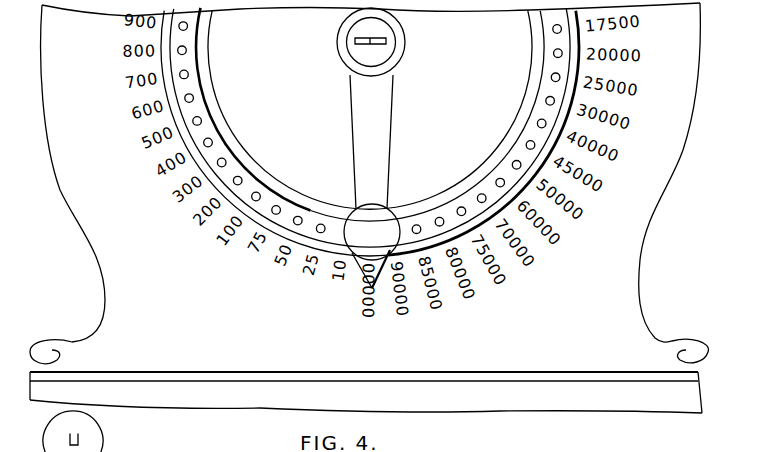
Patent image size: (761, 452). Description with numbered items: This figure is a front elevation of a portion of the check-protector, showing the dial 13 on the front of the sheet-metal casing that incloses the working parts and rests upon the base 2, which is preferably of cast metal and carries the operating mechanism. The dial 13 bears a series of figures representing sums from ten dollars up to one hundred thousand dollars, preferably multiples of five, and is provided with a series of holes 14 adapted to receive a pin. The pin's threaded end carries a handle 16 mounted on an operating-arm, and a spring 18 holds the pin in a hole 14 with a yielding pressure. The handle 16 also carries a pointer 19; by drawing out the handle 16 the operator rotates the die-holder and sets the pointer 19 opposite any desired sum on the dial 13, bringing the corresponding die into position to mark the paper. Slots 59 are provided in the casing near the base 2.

The base 2 is at (618, 402).
The dial 13 is at (647, 188).
The holes 14 is at (242, 180).
The handle 16 is at (382, 225).
The spring 18 is at (375, 137).
The pointer 19 is at (368, 272).
The slots 59 is at (170, 381).